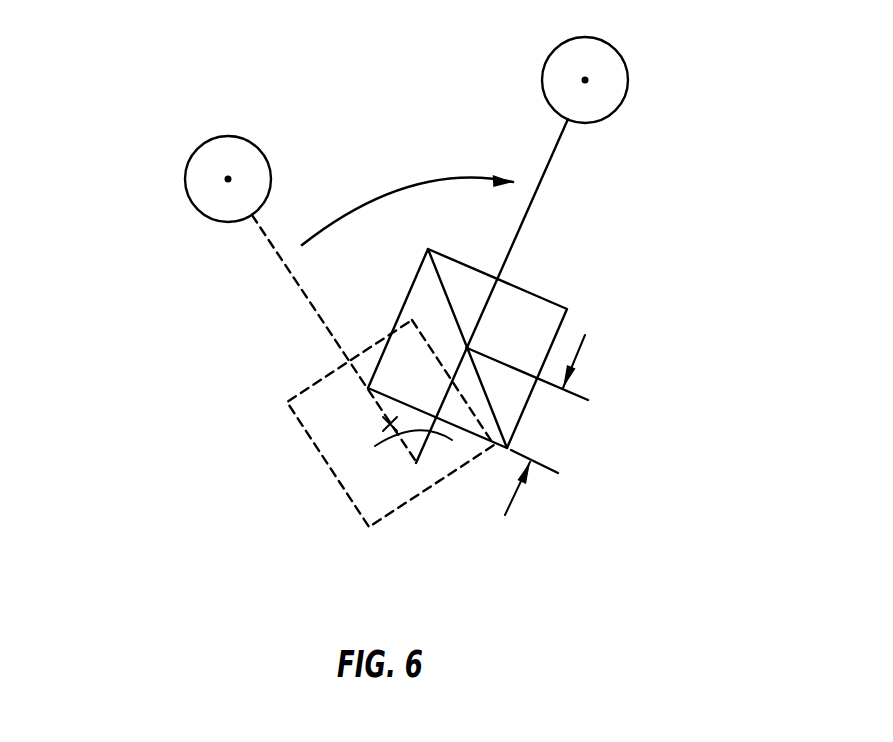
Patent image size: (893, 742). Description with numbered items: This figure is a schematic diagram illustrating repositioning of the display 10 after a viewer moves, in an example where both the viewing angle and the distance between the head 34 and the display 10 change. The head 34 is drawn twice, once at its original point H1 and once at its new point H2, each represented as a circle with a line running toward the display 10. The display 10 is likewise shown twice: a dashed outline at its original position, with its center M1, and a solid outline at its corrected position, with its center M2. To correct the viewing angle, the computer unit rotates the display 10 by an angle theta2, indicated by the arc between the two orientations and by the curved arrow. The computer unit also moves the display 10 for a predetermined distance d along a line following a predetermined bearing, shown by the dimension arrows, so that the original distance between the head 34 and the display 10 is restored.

The head 34 is at (262, 152).
The display 10 is at (320, 380).
The point H(r,θ)1 H1 is at (228, 179).
The point H(r,θ)2 H2 is at (585, 80).
The prism center point M1 is at (390, 424).
The prism center point M2 is at (467, 348).
The angle θ2 theta2 is at (405, 442).
The predetermined distance d is at (527, 425).